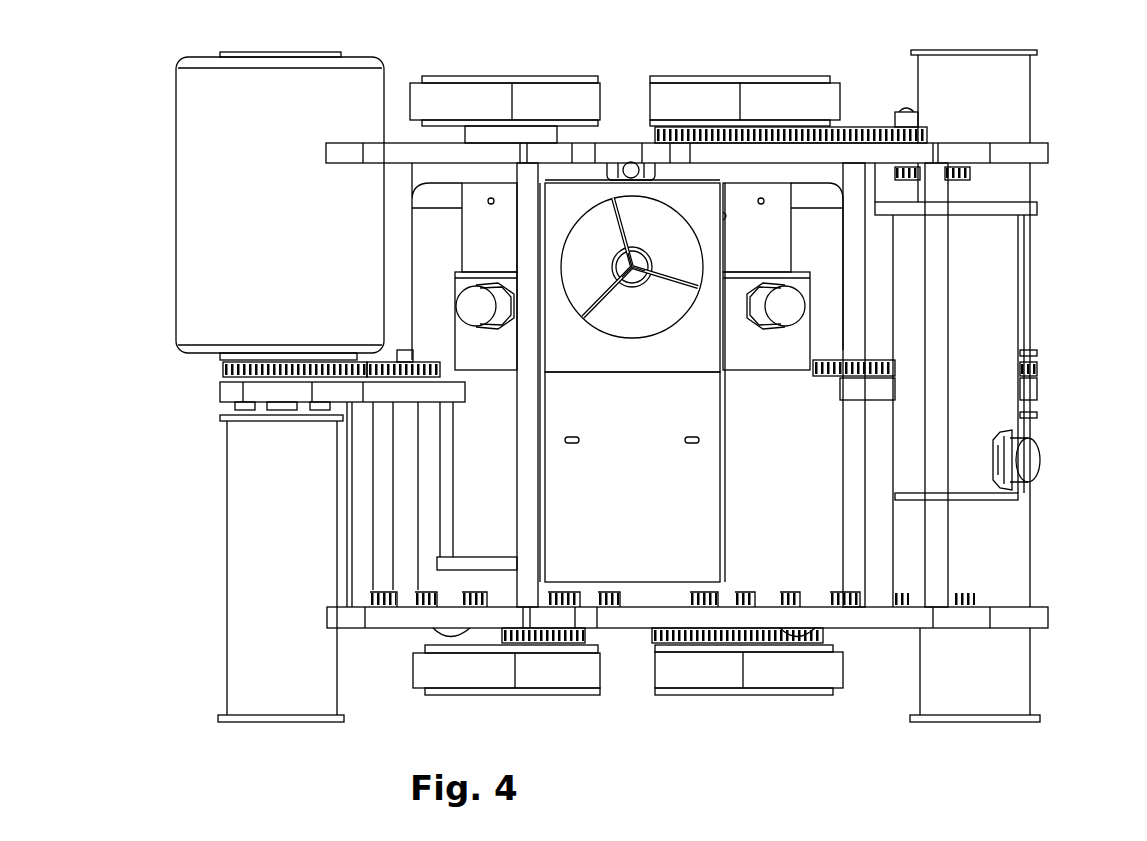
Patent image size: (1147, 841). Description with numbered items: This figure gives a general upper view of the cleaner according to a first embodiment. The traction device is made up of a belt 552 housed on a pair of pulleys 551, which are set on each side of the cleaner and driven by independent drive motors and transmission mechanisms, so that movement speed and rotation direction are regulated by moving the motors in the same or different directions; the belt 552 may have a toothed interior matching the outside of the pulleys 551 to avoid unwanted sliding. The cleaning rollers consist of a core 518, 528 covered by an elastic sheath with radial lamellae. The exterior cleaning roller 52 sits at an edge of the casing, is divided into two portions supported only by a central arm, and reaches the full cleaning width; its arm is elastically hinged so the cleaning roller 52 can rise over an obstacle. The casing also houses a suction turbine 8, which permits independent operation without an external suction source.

The suction turbine 8 is at (670, 242).
The exterior cleaning roller 52 is at (213, 218).
The roller core 518 is at (1003, 96).
The roller core 528 is at (255, 606).
The pulley 551 is at (768, 690).
The belt 552 is at (627, 672).